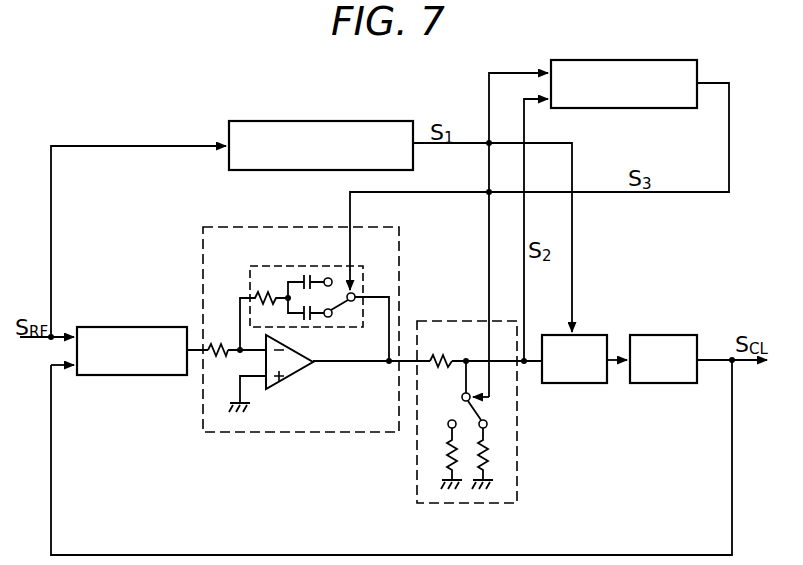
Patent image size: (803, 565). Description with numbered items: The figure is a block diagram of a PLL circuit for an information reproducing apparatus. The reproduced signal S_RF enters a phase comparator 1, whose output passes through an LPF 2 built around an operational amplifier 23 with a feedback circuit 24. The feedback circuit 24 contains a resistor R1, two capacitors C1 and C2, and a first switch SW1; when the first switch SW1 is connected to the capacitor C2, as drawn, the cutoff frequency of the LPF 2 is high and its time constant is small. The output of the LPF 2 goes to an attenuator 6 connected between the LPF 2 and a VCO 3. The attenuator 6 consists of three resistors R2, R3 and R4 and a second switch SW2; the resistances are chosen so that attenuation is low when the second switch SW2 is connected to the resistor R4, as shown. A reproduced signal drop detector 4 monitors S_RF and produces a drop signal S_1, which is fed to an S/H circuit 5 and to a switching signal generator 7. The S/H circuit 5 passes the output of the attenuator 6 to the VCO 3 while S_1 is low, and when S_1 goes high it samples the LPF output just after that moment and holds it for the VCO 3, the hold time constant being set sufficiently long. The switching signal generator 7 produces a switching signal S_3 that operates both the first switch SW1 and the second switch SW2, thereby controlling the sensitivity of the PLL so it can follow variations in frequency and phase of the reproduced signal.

The phase comparator 1 is at (150, 327).
The LPF 2 is at (240, 227).
The VCO 3 is at (665, 383).
The reproduced signal drop detector 4 is at (372, 121).
The S/H circuit 5 is at (575, 383).
The attenuator 6 is at (490, 503).
The switching signal generator 7 is at (655, 60).
The operational amplifier 23 is at (297, 380).
The feedback network 24 is at (250, 276).
The resistor R1 is at (265, 292).
The capacitor C1 is at (305, 275).
The capacitor C2 is at (305, 321).
The first switch SW1 is at (341, 306).
The resistor R2 is at (440, 356).
The second switch SW2 is at (469, 410).
The resistor R3 is at (445, 456).
The resistor R4 is at (488, 456).